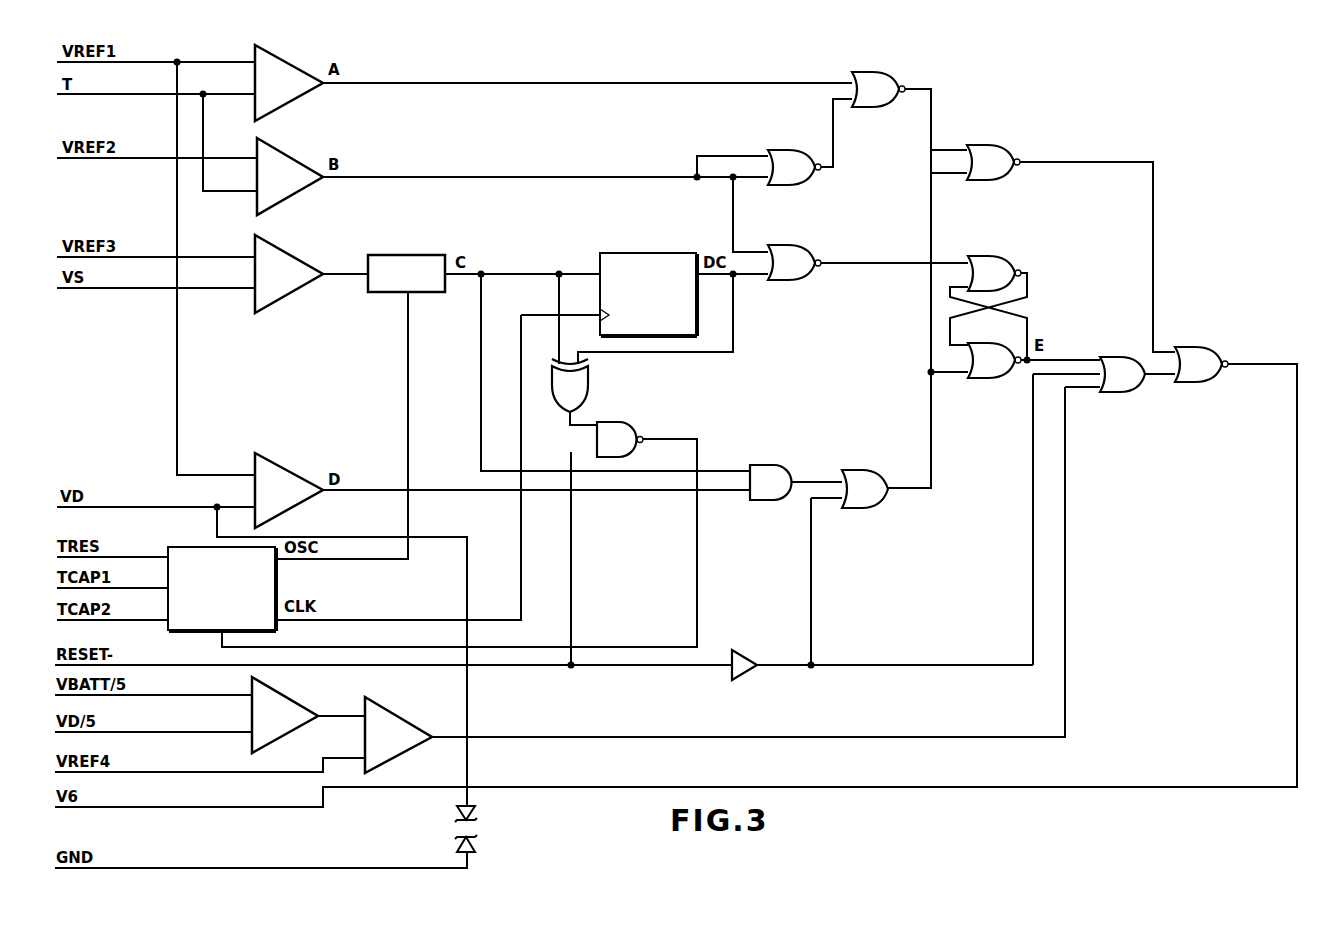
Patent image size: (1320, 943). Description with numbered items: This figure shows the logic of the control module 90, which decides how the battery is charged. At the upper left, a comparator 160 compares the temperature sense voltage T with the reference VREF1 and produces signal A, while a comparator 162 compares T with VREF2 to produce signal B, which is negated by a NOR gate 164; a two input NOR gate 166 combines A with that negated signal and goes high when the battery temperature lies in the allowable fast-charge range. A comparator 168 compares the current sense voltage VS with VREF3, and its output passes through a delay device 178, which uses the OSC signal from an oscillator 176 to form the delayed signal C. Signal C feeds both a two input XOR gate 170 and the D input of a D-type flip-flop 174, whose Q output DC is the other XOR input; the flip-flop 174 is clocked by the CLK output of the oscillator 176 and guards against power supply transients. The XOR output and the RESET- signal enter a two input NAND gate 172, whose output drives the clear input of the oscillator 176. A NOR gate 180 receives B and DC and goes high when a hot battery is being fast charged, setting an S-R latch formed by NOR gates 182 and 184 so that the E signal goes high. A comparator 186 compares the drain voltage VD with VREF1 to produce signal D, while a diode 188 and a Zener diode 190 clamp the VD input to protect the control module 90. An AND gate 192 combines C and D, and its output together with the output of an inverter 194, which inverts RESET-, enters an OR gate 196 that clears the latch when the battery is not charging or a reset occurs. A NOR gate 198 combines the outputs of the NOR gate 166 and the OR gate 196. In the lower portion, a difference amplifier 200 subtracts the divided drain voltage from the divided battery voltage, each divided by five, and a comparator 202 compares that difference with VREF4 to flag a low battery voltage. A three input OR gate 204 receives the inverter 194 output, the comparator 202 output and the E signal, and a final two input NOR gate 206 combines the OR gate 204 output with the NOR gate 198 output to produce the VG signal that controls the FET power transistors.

The control module 90 is at (1227, 212).
The comparator 160 is at (303, 99).
The comparator 162 is at (300, 194).
The NOR gate 164 is at (781, 187).
The two input NOR gate 166 is at (870, 109).
The comparator 168 is at (280, 300).
The two input XOR gate 170 is at (588, 372).
The two input NAND gate 172 is at (620, 421).
The D-type flip-flop 174 is at (644, 253).
The oscillator 176 is at (196, 547).
The delay device 178 is at (410, 255).
The two input NOR gate 180 is at (780, 282).
The NOR gate 182 is at (1003, 257).
The NOR gate 184 is at (986, 380).
The comparator 186 is at (290, 466).
The diode 188 is at (476, 814).
The Zener diode 190 is at (477, 845).
The two input AND gate 192 is at (766, 463).
The inverter 194 is at (742, 678).
The two input OR gate 196 is at (842, 470).
The two input NOR gate 198 is at (995, 181).
The difference amplifier 200 is at (293, 699).
The comparator 202 is at (394, 717).
The three input OR gate 204 is at (1117, 393).
The two input NOR gate 206 is at (1200, 383).